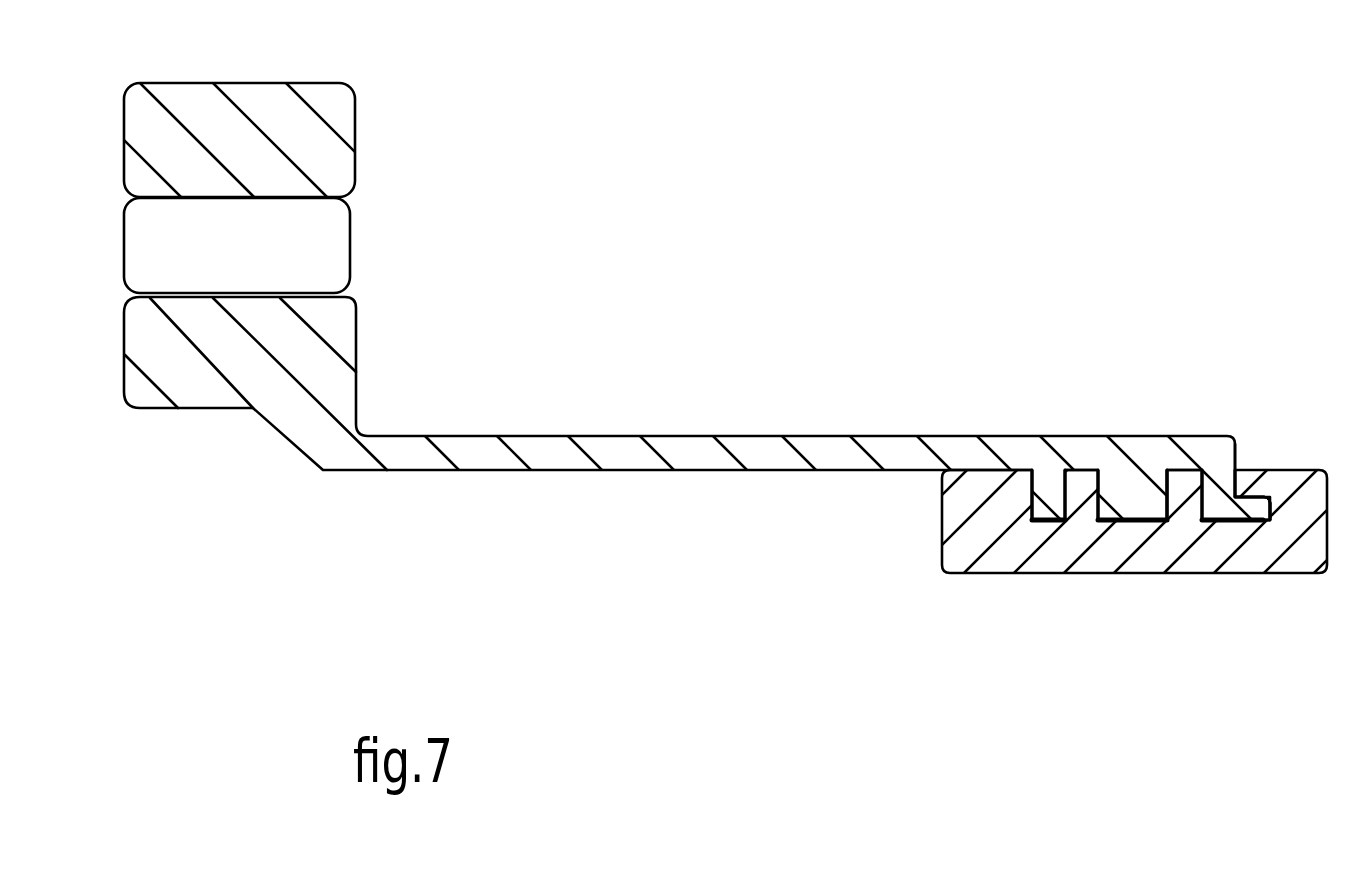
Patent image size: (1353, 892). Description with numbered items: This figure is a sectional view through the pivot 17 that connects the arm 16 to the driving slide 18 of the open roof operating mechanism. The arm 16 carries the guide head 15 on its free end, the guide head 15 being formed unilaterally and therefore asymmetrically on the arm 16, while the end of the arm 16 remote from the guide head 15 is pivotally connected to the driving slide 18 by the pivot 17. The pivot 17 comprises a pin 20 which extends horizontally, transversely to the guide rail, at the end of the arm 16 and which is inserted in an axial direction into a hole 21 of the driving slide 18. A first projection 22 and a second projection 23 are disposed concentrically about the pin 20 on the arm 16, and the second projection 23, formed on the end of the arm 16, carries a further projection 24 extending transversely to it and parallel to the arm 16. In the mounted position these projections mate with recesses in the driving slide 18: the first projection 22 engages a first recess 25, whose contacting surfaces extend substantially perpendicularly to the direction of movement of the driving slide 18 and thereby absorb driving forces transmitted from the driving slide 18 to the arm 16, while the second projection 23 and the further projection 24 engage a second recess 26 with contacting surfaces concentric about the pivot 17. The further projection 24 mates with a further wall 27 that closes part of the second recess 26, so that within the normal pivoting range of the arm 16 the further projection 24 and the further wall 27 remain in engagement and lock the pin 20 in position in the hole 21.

The guide head 15 is at (362, 143).
The arm 16 is at (557, 458).
The pivot 17 is at (1120, 400).
The driving slide 18 is at (1048, 557).
The pin 20 is at (1113, 584).
The hole 21 is at (1172, 503).
The first projection 22 is at (1047, 490).
The second projection 23 is at (1190, 584).
The further projection 24 is at (1267, 632).
The first recess 25 is at (1009, 599).
The second recess 26 is at (1233, 588).
The further wall 27 is at (1262, 482).